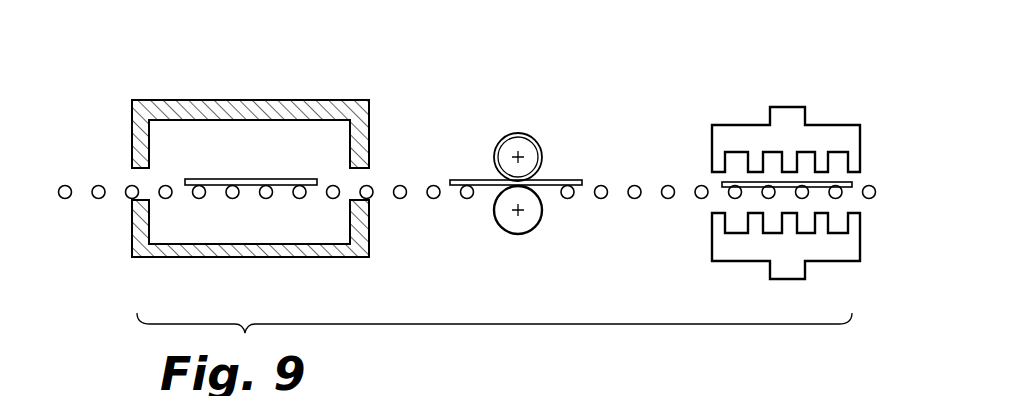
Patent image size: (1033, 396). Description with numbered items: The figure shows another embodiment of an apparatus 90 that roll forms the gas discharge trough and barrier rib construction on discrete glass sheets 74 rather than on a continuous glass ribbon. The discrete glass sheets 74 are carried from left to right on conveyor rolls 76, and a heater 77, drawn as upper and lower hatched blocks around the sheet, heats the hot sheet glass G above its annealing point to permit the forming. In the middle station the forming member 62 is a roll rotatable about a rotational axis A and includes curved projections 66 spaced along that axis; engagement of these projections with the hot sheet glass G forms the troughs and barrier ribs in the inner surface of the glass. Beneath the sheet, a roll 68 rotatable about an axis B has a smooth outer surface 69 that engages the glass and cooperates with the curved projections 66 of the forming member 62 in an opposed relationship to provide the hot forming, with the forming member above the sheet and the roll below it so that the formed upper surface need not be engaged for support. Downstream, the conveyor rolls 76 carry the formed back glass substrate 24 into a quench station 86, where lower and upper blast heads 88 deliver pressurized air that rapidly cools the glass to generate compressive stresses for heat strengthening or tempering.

The heater 77 is at (165, 96).
The discrete glass sheets 74 is at (225, 178).
The hot sheet glass G is at (273, 178).
The rolls 76 is at (200, 199).
The apparatus 90 is at (441, 62).
The forming member 62 is at (535, 135).
The curved projections 66 is at (496, 154).
The rotational axis A is at (520, 156).
The roll 68 is at (546, 212).
The smooth outer surface 69 is at (495, 205).
The axis B is at (517, 212).
The quench station 86 is at (808, 91).
The lower and upper blast heads 88 is at (760, 127).
The back glass substrate 24 is at (822, 182).